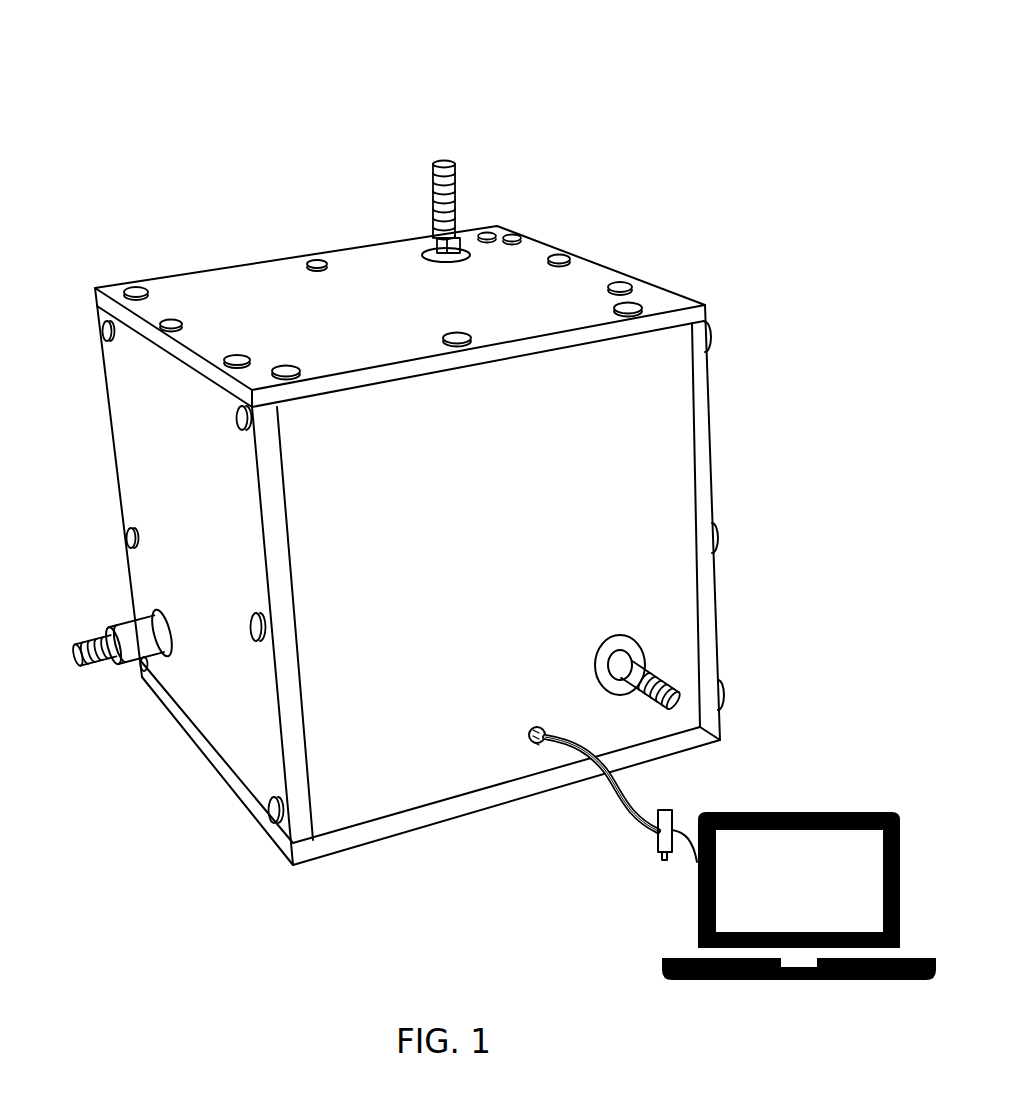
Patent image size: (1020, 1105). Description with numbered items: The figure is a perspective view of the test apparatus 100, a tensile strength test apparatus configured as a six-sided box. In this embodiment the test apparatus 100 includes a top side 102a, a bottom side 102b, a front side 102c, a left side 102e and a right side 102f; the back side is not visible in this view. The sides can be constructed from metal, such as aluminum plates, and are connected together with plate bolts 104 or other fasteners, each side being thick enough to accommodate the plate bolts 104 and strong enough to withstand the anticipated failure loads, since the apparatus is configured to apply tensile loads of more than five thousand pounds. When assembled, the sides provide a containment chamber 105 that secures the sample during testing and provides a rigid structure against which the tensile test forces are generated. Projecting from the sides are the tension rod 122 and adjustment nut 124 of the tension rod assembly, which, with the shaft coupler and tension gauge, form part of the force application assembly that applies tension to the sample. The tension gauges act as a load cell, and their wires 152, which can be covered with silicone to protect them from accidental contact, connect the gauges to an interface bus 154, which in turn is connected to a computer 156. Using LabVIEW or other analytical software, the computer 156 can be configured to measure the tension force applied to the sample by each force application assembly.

The test apparatus 100 is at (137, 58).
The top side 102a is at (253, 278).
The bottom side 102b is at (383, 832).
The front side 102c is at (670, 453).
The left side 102e is at (117, 387).
The right side 102f is at (700, 506).
The plate bolts 104 is at (120, 292).
The containment chamber 105 is at (138, 779).
The tension rod 122 is at (455, 178).
The adjustment nut 124 is at (433, 245).
The wires 152 is at (610, 795).
The interface bus 154 is at (663, 862).
The computer 156 is at (817, 812).